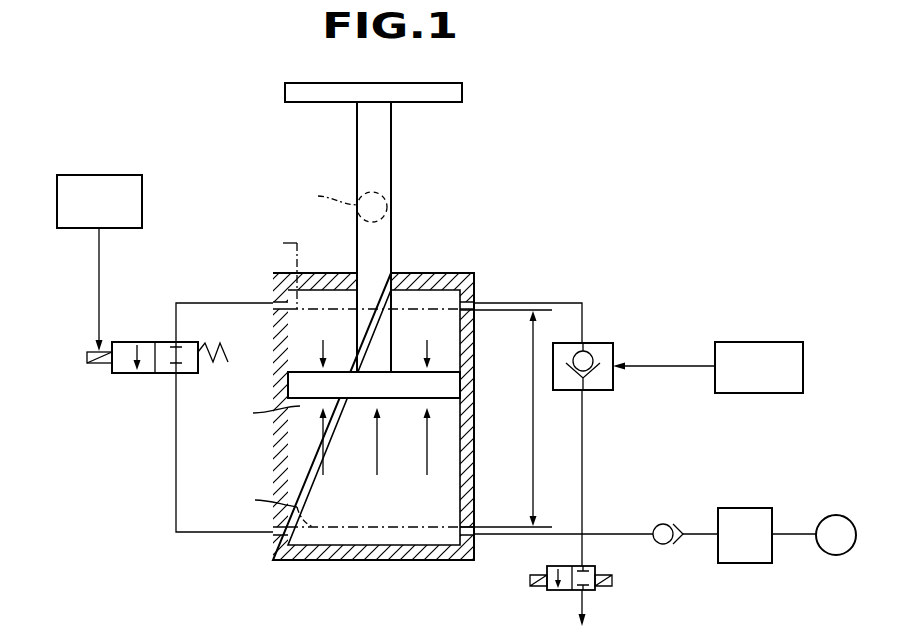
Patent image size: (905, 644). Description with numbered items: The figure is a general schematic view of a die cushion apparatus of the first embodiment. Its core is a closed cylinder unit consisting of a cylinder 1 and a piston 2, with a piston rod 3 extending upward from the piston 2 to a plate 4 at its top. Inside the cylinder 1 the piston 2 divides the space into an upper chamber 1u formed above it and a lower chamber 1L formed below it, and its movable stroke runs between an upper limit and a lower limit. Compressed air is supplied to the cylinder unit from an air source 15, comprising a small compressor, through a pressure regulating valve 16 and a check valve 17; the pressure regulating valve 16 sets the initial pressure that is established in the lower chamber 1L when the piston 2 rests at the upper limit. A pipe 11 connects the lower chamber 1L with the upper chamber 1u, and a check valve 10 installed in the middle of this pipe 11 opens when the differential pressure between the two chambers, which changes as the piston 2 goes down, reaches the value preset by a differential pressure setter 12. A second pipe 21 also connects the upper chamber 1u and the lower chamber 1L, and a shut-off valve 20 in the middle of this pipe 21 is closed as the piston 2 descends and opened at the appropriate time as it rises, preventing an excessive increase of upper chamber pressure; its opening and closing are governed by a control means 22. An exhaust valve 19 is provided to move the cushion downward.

The cylinder 1 is at (443, 278).
The upper chamber 1u is at (448, 348).
The lower chamber 1L is at (447, 460).
The piston 2 is at (451, 389).
The piston rod 3 is at (385, 165).
The table / load plate 4 is at (462, 93).
The check valve 10 is at (603, 343).
The pipe 11 is at (583, 320).
The differential pressure setter 12 is at (735, 355).
The air source 15 is at (838, 525).
The pressure regulating valve 16 is at (741, 516).
The check valve 17 is at (664, 522).
The exhaust valve 19 is at (597, 590).
The shut-off valve 20 is at (100, 376).
The pipe 21 is at (176, 455).
The control means 22 is at (77, 177).